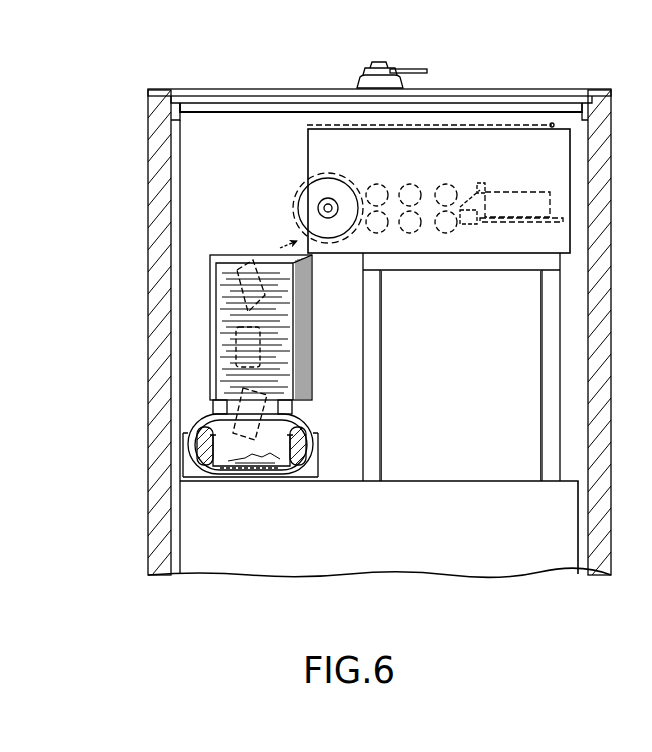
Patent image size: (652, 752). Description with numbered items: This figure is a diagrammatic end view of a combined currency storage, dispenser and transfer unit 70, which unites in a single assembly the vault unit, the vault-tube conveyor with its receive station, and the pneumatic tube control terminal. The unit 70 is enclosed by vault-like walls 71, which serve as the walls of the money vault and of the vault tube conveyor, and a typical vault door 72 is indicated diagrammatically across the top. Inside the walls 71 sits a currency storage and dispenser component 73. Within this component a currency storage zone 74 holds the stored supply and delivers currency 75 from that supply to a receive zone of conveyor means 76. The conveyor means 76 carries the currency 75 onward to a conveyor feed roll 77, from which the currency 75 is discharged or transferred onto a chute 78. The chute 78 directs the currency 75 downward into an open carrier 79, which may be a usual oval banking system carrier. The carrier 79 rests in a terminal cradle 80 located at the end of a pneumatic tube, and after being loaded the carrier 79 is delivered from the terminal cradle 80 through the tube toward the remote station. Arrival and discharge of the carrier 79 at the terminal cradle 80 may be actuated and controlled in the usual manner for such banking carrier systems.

The storage, dispenser and transfer unit 70 is at (142, 378).
The vault-like walls 71 is at (157, 267).
The vault door 72 is at (255, 92).
The currency storage and dispenser component 73 is at (498, 147).
The currency storage zone 74 is at (540, 187).
The currency 75 is at (240, 268).
The conveyor means 76 is at (412, 233).
The conveyor feed roll 77 is at (300, 200).
The chute 78 is at (227, 320).
The carrier 79 is at (322, 422).
The terminal cradle 80 is at (313, 465).